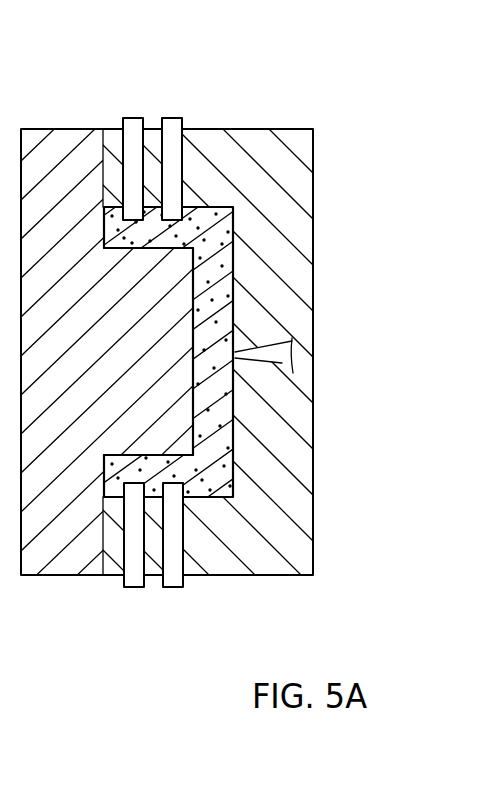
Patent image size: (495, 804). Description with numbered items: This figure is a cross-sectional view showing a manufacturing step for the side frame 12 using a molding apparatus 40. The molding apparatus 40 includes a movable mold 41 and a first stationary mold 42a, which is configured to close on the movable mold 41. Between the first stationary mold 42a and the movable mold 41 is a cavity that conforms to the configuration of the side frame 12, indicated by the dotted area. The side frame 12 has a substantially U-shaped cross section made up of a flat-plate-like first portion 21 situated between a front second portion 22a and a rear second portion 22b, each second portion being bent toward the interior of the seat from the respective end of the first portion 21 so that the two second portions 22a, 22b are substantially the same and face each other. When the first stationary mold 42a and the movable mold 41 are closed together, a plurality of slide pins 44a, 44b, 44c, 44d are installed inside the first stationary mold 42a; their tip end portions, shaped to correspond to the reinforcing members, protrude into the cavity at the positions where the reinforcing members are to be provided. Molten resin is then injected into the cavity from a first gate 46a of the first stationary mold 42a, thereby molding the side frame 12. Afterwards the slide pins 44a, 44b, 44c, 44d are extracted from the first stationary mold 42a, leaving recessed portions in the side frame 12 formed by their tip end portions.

The side frame 12 is at (427, 218).
The first portion 21 is at (235, 297).
The front second portion 22a is at (235, 457).
The rear second portion 22b is at (235, 215).
The molding apparatus 40 is at (184, 337).
The movable mold 41 is at (69, 126).
The first stationary mold 42a is at (259, 126).
The slide pin 44a is at (135, 122).
The slide pin 44b is at (174, 122).
The slide pin 44c is at (135, 588).
The slide pin 44d is at (177, 588).
The first gate 46a is at (281, 354).